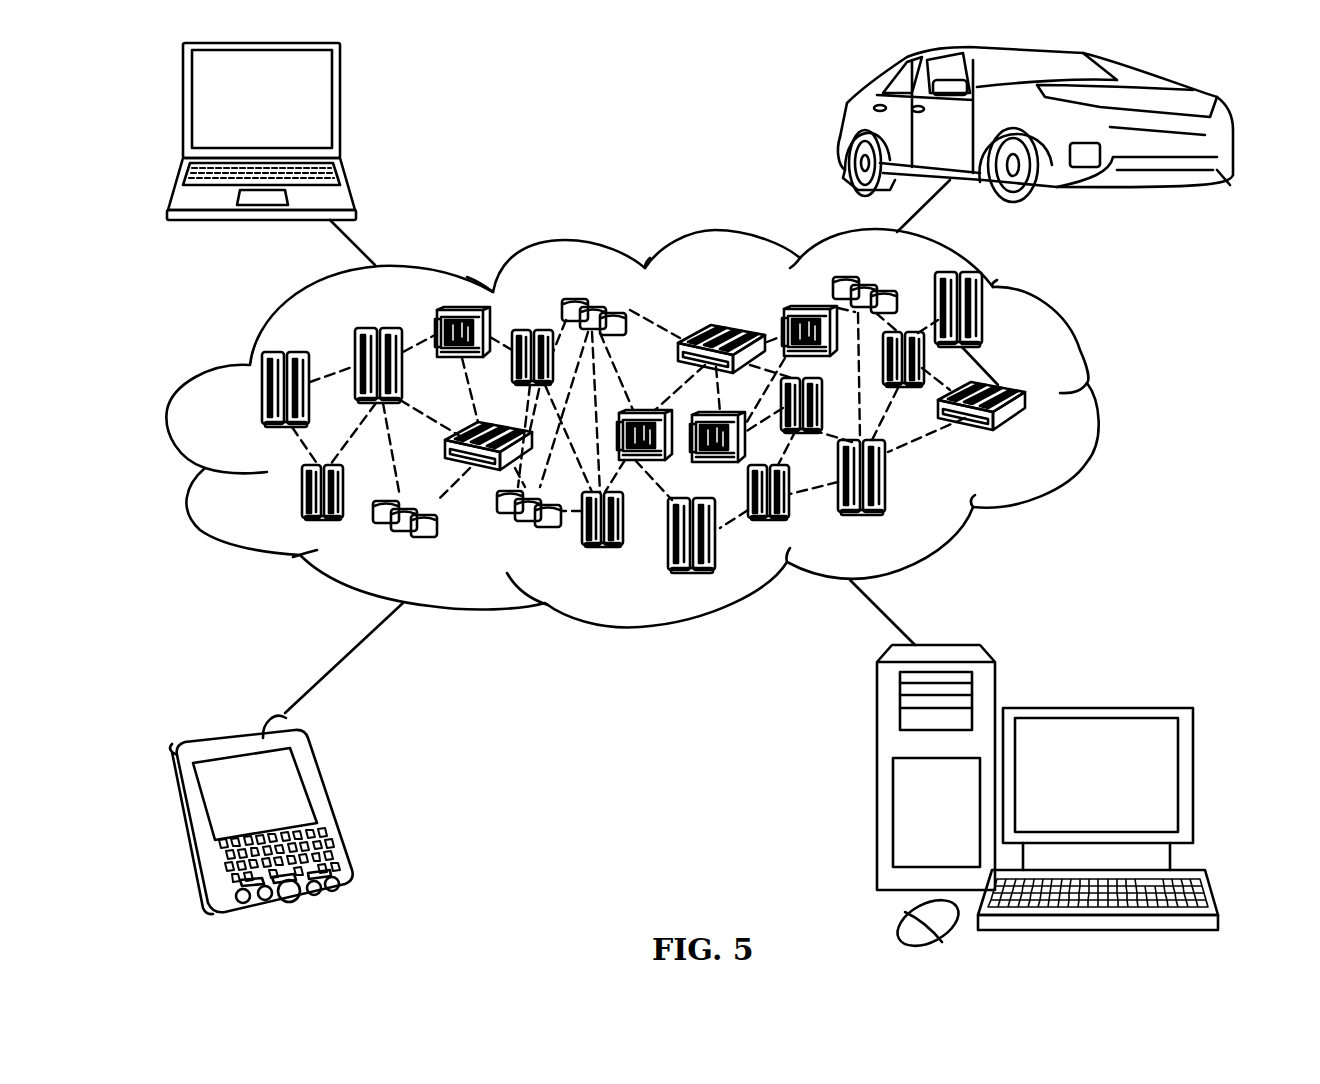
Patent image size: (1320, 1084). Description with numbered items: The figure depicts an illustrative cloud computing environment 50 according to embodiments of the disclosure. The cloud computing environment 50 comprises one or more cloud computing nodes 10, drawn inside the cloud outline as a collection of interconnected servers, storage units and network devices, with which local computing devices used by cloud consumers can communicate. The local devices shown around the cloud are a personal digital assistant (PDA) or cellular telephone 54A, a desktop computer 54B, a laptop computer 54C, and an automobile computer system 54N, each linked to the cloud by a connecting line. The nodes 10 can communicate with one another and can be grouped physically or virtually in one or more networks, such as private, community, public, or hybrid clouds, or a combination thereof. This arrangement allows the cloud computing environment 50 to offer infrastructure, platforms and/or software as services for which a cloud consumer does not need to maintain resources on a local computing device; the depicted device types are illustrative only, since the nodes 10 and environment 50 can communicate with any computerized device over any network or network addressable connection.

The cloud computing node 10 is at (1035, 433).
The cloud computing environment 50 is at (1097, 404).
The personal digital assistant (PDA) or cellular telephone 54A is at (328, 808).
The desktop computer 54B is at (1095, 707).
The laptop computer 54C is at (340, 113).
The automobile computer system 54N is at (842, 127).